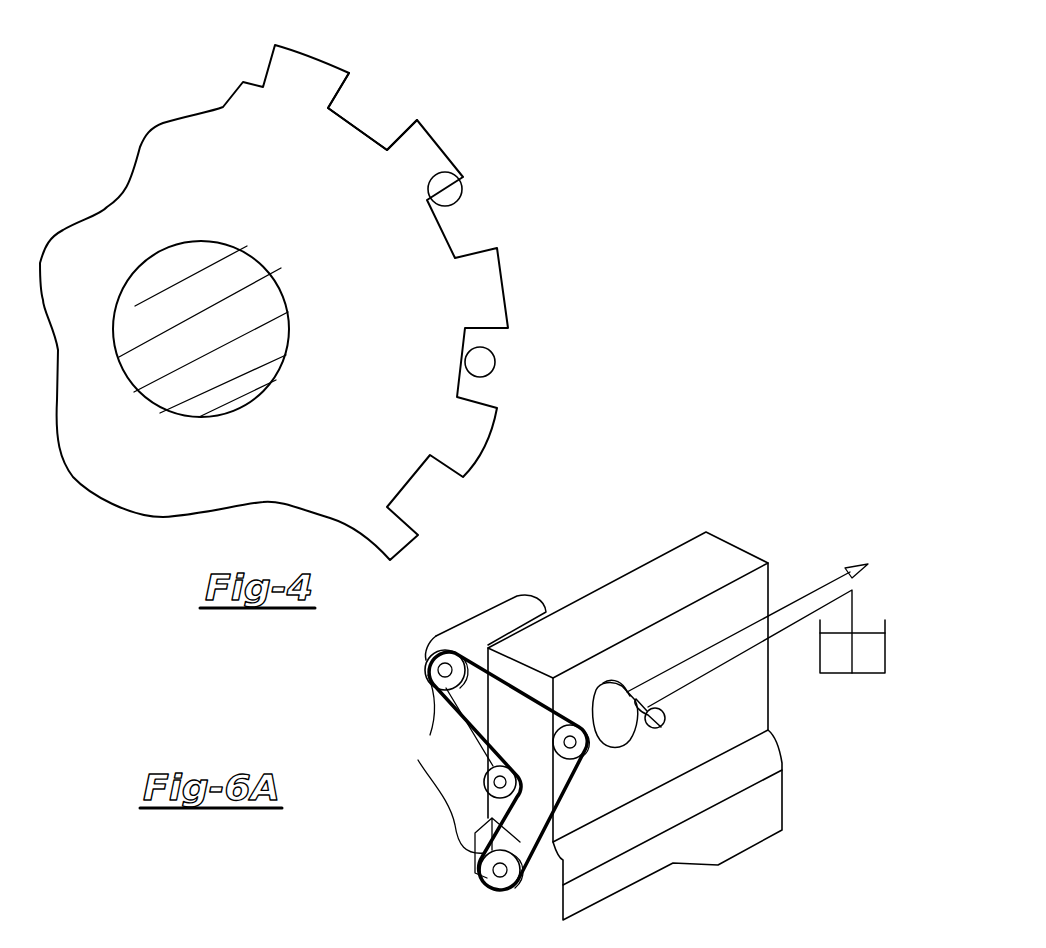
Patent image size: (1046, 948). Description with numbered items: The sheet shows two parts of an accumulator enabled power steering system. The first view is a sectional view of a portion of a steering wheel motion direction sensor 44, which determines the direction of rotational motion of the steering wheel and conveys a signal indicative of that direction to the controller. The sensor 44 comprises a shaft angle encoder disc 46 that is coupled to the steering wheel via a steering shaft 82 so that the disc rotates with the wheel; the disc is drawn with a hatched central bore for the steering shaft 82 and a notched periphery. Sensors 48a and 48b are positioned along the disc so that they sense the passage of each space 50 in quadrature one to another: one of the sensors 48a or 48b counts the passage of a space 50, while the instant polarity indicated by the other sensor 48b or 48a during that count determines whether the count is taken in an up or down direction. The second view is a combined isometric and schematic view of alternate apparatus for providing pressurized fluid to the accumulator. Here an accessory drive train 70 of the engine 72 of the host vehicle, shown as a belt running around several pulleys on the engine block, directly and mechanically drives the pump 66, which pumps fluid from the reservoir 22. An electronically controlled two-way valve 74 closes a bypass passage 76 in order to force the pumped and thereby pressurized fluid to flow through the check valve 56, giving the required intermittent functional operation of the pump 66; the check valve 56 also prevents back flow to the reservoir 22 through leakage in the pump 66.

In FIG. 4, the steering wheel motion direction sensor 44 is at (556, 247).
In FIG. 4, the shaft angle encoder disc 46 is at (333, 232).
In FIG. 4, the space 50 is at (420, 118).
In FIG. 4, the sensor 48a is at (458, 203).
In FIG. 4, the sensor 48b is at (496, 362).
In FIG. 4, the steering shaft 82 is at (289, 340).
In FIG. 6A, the engine 72 is at (683, 590).
In FIG. 6A, the accessory drive train 70 is at (492, 779).
In FIG. 6A, the pump 66 is at (592, 714).
In FIG. 6A, the bypass passage 76 is at (623, 690).
In FIG. 6A, the electronically controlled two-way valve 74 is at (662, 723).
In FIG. 6A, the check valve 56 is at (766, 619).
In FIG. 6A, the reservoir 22 is at (867, 677).